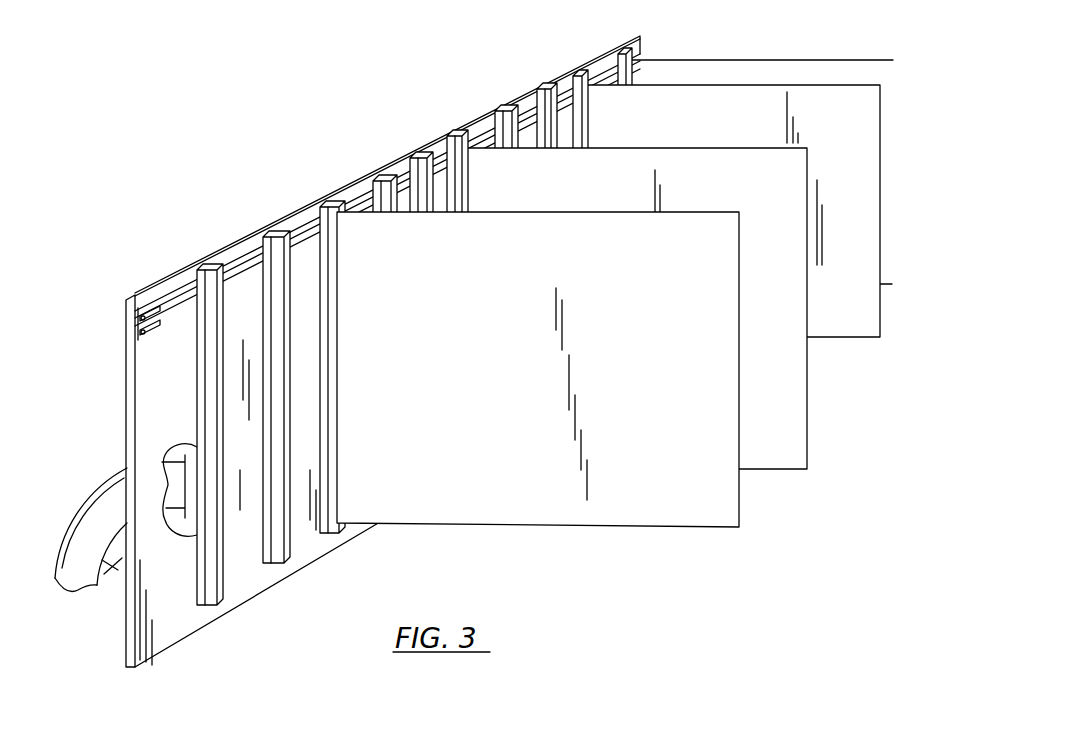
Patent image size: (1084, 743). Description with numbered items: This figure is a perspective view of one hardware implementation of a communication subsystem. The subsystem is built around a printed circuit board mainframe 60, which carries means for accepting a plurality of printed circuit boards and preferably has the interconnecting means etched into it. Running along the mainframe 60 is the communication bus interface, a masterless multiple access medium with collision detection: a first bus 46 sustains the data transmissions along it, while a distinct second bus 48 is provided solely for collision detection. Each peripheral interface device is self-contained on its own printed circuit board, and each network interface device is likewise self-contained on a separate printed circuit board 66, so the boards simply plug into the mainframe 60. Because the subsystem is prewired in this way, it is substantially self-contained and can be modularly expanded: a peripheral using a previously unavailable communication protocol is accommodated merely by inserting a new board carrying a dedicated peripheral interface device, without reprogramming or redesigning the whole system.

The first bus 46 is at (147, 313).
The second bus 48 is at (140, 340).
The printed circuit board mainframe 60 is at (307, 213).
The printed circuit board 66 is at (778, 72).